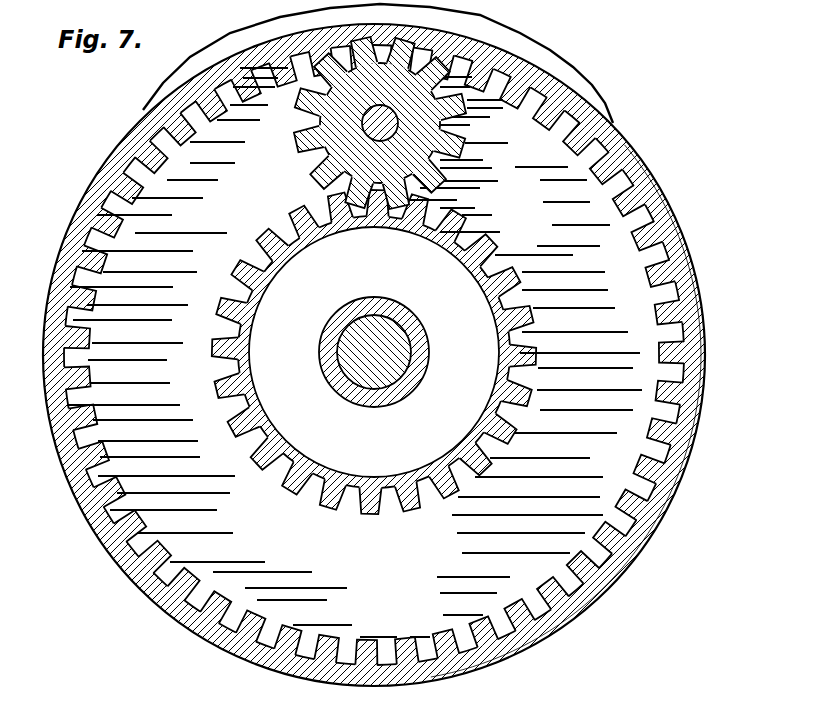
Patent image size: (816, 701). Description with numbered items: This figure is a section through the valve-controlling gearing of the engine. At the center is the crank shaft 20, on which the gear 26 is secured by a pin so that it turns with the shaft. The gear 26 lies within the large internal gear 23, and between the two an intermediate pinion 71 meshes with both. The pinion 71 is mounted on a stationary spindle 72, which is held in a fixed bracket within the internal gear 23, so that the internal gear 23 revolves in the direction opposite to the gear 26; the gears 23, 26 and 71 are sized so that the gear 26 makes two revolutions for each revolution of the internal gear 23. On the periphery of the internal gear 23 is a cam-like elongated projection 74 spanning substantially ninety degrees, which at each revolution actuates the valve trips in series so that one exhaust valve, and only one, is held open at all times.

The crank shaft 20 is at (357, 405).
The internal gear 23 is at (697, 290).
The gear 26 is at (232, 364).
The intermediate pinion 71 is at (478, 139).
The stationary spindle 72 is at (393, 112).
The cam-like elongated projection 74 is at (575, 68).